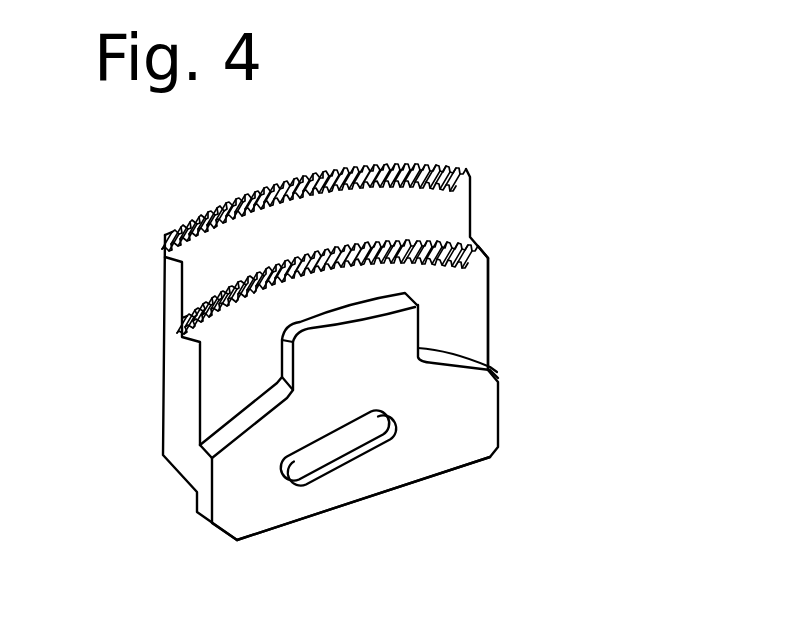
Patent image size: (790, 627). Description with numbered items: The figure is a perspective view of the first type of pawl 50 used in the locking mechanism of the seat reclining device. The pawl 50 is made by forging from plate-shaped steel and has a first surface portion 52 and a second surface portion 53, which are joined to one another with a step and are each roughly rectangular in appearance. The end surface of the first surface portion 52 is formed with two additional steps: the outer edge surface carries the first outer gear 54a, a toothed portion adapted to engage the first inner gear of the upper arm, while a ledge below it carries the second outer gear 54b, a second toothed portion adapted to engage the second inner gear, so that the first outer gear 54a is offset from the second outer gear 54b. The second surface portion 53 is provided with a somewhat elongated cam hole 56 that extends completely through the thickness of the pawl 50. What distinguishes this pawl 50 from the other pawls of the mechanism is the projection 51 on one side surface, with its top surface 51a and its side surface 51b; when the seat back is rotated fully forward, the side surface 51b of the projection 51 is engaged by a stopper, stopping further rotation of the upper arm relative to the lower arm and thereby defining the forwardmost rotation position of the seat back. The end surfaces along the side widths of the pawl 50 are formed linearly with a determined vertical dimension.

The pawl 50 is at (515, 419).
The projection 51 is at (397, 340).
The top surface of curved rib 51a is at (378, 303).
The side surface 51b is at (422, 322).
The first surface portion 52 is at (462, 293).
The second surface portion 53 is at (467, 445).
The first outer gear 54a is at (383, 162).
The second outer gear 54b is at (418, 232).
The cam hole 56 is at (349, 449).